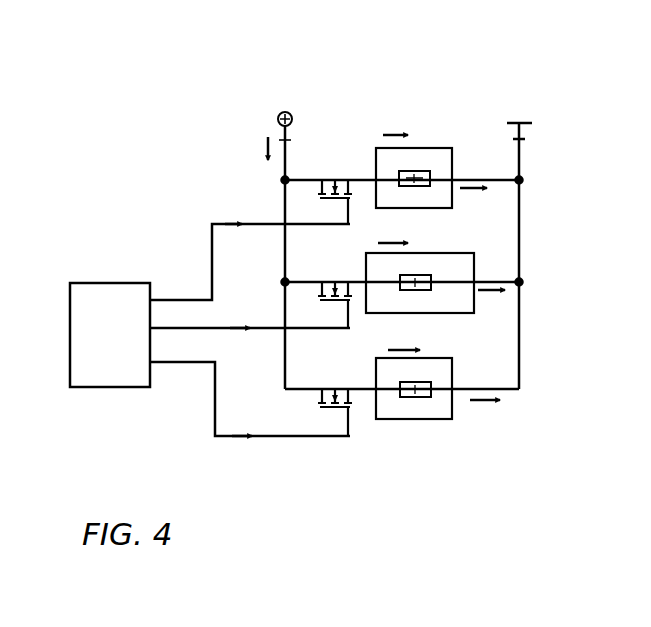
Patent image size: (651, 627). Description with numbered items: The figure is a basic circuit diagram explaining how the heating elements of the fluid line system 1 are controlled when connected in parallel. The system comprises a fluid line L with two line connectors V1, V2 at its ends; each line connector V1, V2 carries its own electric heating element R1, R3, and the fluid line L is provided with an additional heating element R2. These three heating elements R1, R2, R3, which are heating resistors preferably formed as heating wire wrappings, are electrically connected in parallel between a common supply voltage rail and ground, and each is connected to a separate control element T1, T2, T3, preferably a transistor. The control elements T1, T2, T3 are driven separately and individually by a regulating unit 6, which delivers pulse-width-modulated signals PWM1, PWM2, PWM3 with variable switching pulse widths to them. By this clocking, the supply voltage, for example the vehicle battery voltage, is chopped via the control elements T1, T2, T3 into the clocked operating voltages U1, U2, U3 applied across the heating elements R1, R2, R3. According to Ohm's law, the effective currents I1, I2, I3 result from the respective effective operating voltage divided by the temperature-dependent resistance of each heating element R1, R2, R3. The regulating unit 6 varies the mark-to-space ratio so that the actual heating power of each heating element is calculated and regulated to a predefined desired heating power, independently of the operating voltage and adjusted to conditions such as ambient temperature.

The fluid line system 1 is at (362, 127).
The regulating unit 6 is at (102, 300).
The control element T1 is at (334, 187).
The control element T2 is at (334, 290).
The control element T3 is at (334, 398).
The heating element R1 is at (414, 168).
The heating element R2 is at (415, 272).
The heating element R3 is at (415, 379).
The line connector V1 is at (440, 146).
The line connector V2 is at (444, 424).
The fluid line L is at (455, 250).
The clocked operating voltage U1 is at (397, 121).
The clocked operating voltage U2 is at (393, 230).
The clocked operating voltage U3 is at (403, 337).
The effective current I1 is at (473, 205).
The effective current I2 is at (491, 306).
The effective current I3 is at (485, 417).
The PWM control signal PWM1 is at (250, 248).
The PWM control signal PWM2 is at (250, 343).
The PWM control signal PWM3 is at (250, 414).